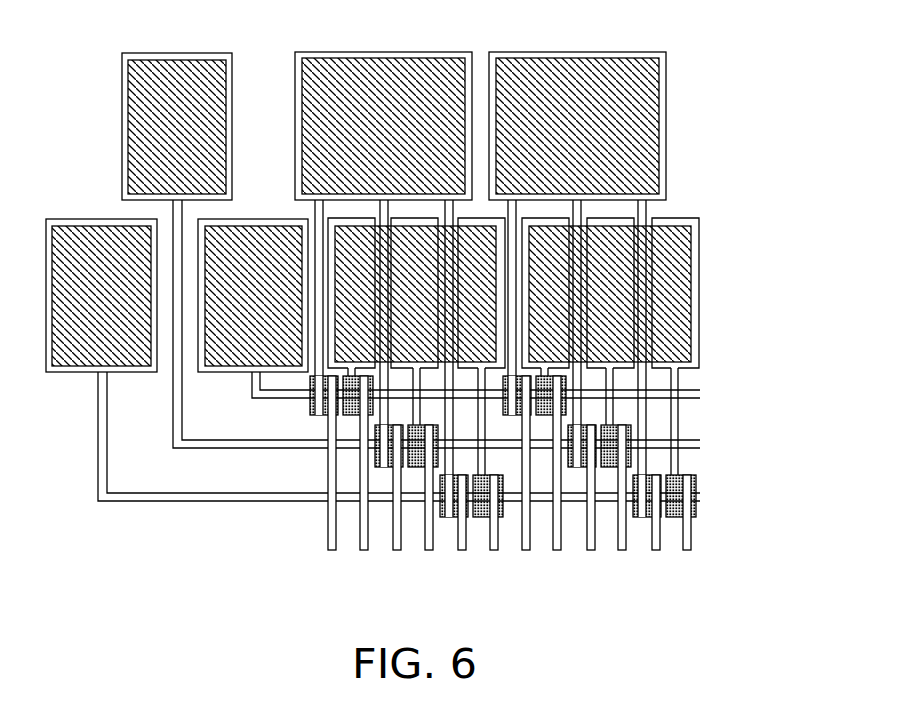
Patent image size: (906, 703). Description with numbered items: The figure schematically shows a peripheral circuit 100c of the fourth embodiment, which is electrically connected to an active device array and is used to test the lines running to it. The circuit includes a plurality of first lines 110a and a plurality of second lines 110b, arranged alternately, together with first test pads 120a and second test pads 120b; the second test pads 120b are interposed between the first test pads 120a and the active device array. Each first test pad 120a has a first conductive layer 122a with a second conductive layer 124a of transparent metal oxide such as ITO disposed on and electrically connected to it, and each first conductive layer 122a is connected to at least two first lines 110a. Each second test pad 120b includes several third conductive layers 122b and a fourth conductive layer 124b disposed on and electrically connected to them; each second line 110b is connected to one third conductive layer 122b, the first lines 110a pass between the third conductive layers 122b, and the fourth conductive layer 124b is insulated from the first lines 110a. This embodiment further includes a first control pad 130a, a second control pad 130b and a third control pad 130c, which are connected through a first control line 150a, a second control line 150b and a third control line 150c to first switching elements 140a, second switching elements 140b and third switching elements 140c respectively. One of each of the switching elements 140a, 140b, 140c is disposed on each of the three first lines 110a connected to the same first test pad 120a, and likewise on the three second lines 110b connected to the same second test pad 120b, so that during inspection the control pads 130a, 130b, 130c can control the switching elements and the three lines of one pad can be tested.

The peripheral circuit 100c is at (425, 304).
The first lines 110a is at (643, 419).
The second lines 110b is at (678, 381).
The first test pads 120a is at (564, 126).
The first conductive layer 122a is at (663, 99).
The second conductive layer 124a is at (637, 138).
The second test pads 120b is at (580, 293).
The third conductive layers 122b is at (692, 261).
The fourth conductive layer 124b is at (673, 296).
The first control pad 130a is at (264, 218).
The second control pad 130b is at (122, 143).
The third control pad 130c is at (70, 373).
The first switching elements 140a is at (317, 418).
The second switching elements 140b is at (381, 468).
The third switching elements 140c is at (448, 518).
The first control line 150a is at (252, 390).
The second control line 150b is at (177, 431).
The third control line 150c is at (124, 503).